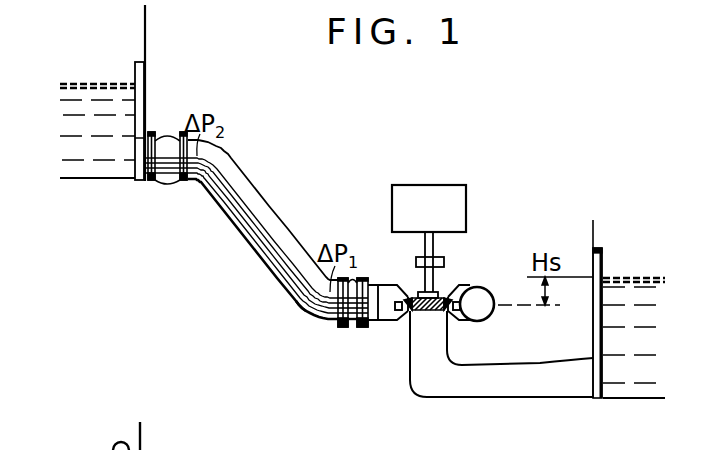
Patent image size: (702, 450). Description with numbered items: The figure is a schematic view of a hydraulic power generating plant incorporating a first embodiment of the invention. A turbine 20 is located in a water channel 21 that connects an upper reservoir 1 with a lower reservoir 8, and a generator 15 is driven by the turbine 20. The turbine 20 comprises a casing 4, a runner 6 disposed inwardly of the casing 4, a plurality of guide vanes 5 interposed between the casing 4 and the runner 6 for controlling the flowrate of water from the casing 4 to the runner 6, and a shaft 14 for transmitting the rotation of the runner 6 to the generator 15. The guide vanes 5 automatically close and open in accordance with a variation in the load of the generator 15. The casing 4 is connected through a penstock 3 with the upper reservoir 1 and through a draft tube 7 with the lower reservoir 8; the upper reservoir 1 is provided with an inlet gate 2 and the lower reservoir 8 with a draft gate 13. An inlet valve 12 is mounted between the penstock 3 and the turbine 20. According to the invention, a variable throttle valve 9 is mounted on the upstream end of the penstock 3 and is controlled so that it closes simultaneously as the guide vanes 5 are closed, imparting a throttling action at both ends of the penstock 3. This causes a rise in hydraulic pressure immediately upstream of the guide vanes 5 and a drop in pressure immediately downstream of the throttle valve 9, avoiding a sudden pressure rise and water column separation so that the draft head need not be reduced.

The upper reservoir 1 is at (86, 85).
The inlet gate 2 is at (135, 62).
The penstock 3 is at (283, 227).
The casing 4 is at (489, 292).
The guide vanes 5 is at (462, 289).
The runner 6 is at (438, 296).
The draft tube 7 is at (492, 398).
The lower reservoir 8 is at (630, 277).
The variable throttle valve 9 is at (167, 183).
The inlet valve 12 is at (351, 329).
The draft gate 13 is at (600, 248).
The shaft 14 is at (421, 281).
The generator 15 is at (466, 207).
The turbine 20 is at (397, 327).
The water channel 21 is at (288, 293).